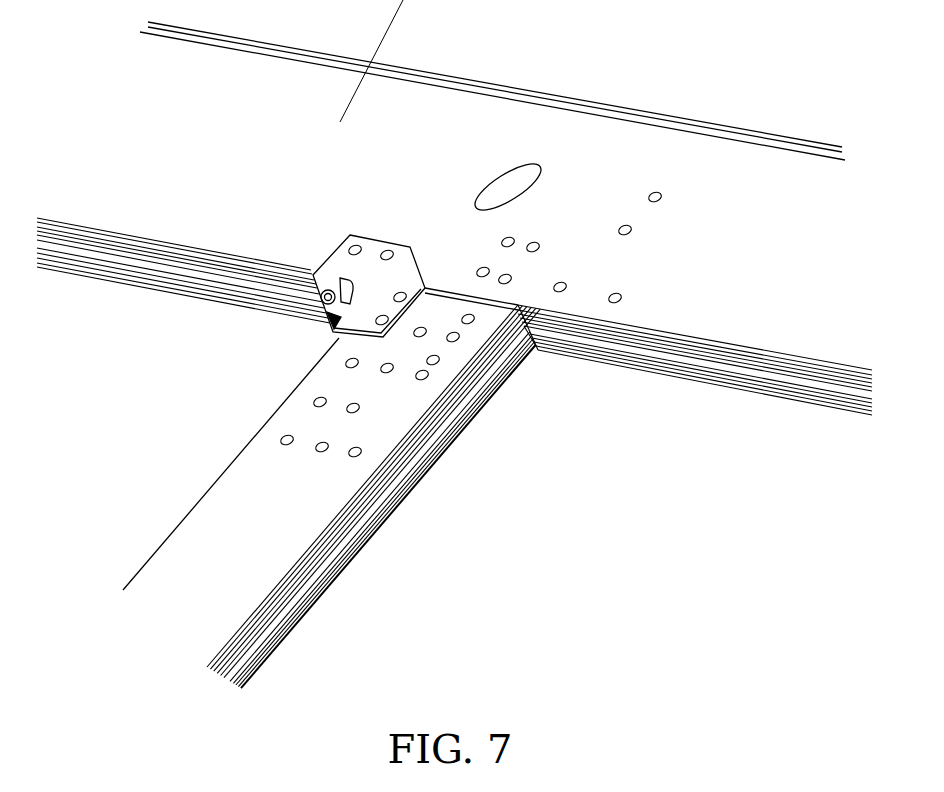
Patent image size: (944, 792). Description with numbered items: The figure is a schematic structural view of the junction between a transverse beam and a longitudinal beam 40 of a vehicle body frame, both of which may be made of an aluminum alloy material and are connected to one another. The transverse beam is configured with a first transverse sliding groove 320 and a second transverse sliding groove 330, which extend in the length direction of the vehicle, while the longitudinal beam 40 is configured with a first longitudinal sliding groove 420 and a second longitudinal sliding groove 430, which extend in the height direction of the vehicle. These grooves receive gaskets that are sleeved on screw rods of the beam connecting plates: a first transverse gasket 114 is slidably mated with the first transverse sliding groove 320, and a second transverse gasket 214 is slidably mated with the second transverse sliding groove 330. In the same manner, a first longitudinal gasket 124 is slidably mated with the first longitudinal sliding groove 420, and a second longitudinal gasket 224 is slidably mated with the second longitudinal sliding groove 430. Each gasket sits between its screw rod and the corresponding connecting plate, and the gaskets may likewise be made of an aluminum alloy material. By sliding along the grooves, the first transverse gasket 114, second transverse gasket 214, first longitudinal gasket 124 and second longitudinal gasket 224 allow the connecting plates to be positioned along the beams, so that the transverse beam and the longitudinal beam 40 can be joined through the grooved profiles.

The longitudinal beam 40 is at (302, 497).
The first transverse gasket 114 is at (587, 330).
The first longitudinal gasket 124 is at (476, 373).
The second transverse gasket 214 is at (600, 368).
The second longitudinal gasket 224 is at (490, 400).
The first transverse sliding groove 320 is at (643, 342).
The second transverse sliding groove 330 is at (700, 373).
The first longitudinal sliding groove 420 is at (403, 443).
The second longitudinal sliding groove 430 is at (440, 457).